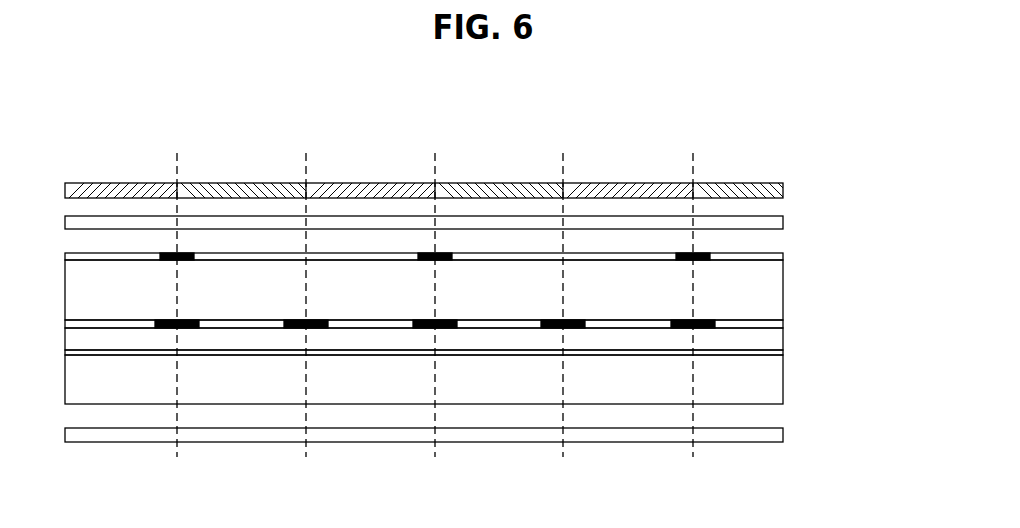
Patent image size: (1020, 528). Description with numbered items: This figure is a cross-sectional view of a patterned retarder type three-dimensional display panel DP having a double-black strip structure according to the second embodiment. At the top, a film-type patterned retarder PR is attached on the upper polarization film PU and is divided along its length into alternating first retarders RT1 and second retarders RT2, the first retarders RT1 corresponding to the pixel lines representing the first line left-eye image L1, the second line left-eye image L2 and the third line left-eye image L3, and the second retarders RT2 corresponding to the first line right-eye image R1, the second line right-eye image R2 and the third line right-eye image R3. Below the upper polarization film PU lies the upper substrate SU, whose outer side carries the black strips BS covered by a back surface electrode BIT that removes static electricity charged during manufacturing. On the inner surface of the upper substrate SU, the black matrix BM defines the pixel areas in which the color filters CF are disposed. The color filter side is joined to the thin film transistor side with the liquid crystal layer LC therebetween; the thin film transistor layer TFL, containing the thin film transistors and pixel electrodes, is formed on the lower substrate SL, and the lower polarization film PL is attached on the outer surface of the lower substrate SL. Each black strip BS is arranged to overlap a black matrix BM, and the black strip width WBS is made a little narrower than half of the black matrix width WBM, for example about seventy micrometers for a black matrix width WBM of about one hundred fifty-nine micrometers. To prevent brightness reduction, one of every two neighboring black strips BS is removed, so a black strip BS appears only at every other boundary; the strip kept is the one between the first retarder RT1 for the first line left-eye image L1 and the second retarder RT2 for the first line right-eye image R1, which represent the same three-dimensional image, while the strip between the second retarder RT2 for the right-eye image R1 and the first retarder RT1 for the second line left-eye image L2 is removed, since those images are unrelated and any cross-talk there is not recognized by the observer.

The patterned retarder PR is at (786, 190).
The first retarder RT1 is at (83, 190).
The second retarder RT2 is at (206, 190).
The first line left-eye image L1 is at (125, 150).
The first line right-eye image R1 is at (241, 150).
The second line left-eye image L2 is at (372, 150).
The second line right-eye image R2 is at (499, 150).
The third line left-eye image L3 is at (630, 150).
The third line right-eye image R3 is at (756, 150).
The upper polarization film PU is at (783, 221).
The black strip BS is at (706, 252).
The back surface electrode BIT is at (783, 256).
The upper substrate SU is at (783, 288).
The black matrix BM is at (712, 319).
The color filter CF is at (783, 323).
The liquid crystal layer LC is at (783, 337).
The thin film transistor layer TFL is at (783, 353).
The lower substrate SL is at (783, 390).
The lower polarization film PL is at (783, 433).
The display panel DP is at (862, 205).
The black strip width WBS is at (140, 282).
The black matrix width WBM is at (133, 301).